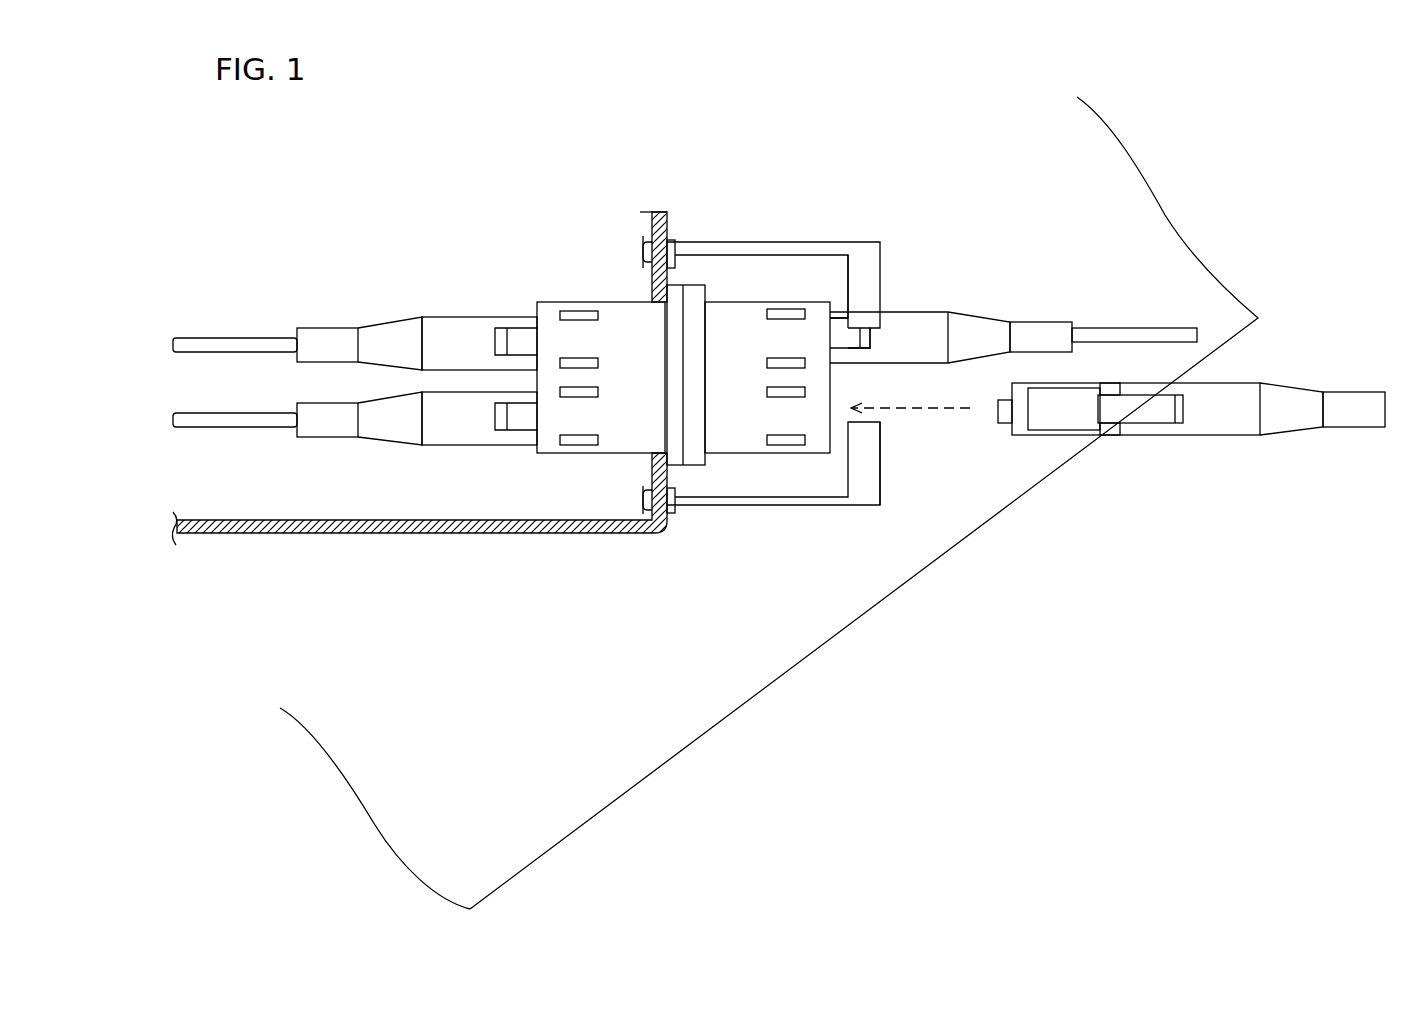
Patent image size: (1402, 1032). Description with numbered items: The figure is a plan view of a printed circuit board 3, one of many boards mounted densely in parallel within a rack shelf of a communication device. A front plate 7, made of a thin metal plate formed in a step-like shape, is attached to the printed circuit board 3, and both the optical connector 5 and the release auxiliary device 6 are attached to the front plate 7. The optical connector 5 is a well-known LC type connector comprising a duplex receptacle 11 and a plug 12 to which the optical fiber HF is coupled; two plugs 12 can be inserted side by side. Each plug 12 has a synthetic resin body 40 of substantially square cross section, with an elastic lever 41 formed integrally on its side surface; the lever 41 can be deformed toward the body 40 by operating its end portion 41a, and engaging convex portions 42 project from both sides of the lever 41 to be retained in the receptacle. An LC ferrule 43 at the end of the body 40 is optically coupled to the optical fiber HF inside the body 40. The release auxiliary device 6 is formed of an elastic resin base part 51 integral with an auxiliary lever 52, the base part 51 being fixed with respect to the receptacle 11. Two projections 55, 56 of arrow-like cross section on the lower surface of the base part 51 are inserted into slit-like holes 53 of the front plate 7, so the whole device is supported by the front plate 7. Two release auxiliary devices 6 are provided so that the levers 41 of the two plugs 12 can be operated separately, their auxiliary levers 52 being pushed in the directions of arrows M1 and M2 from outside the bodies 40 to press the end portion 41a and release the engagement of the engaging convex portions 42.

The printed circuit board 3 is at (590, 808).
The optical connector 5 is at (902, 279).
The release auxiliary device 6 is at (840, 231).
The front plate 7 is at (510, 534).
The receptacle 11 is at (738, 320).
The plug 12 is at (992, 322).
The body 40 is at (930, 322).
The lever 41 is at (848, 330).
The end portion 41a is at (1185, 425).
The engaging convex portions 42 is at (1112, 383).
The LC ferrule 43 is at (995, 425).
The base part 51 is at (690, 540).
The auxiliary lever 52 is at (715, 242).
The slit-like holes 53 is at (648, 243).
The projection 55 is at (591, 357).
The projection 56 is at (643, 250).
The optical fiber HF is at (1104, 328).
The arrow M1 is at (797, 515).
The arrow M2 is at (800, 215).